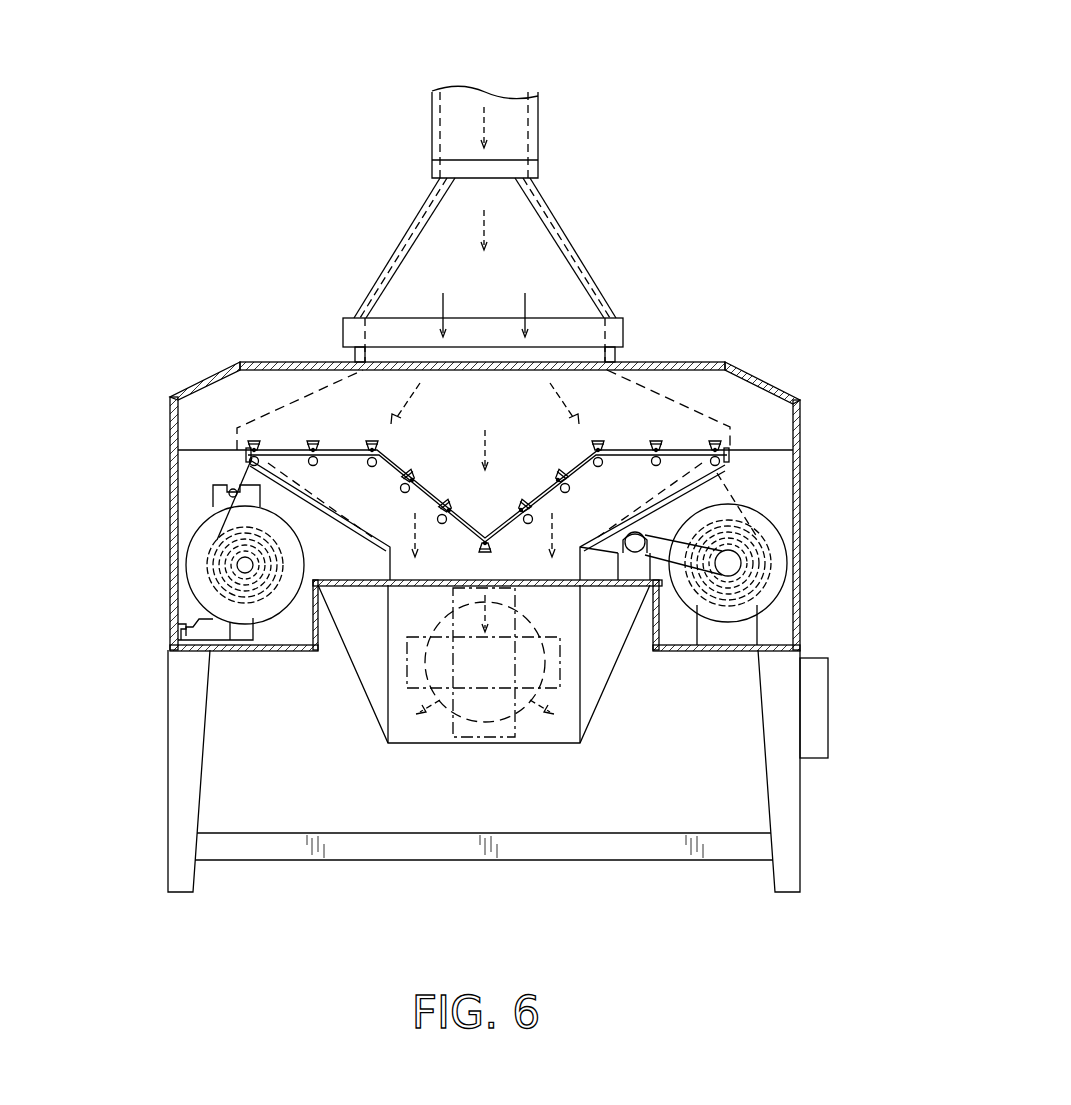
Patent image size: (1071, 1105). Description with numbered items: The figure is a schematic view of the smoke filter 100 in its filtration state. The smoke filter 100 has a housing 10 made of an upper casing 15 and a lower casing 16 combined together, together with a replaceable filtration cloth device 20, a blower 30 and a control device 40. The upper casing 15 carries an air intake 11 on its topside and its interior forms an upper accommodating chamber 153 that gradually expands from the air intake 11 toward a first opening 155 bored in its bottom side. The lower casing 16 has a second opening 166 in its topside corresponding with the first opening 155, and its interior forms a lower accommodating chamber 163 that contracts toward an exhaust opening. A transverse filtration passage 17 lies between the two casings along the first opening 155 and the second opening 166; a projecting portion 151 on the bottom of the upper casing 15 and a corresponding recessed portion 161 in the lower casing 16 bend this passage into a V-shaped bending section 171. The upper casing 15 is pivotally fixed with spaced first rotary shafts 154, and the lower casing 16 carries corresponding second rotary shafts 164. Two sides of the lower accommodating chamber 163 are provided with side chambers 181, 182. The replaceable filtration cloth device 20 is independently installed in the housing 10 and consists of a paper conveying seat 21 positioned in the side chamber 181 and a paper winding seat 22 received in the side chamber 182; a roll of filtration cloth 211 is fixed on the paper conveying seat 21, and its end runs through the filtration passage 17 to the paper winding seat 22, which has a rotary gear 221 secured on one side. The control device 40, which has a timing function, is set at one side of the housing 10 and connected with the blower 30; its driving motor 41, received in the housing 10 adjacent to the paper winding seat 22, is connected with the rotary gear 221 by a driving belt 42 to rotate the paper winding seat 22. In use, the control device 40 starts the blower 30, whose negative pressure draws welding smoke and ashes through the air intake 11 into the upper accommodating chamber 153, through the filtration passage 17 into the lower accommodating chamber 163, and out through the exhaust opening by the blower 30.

The smoke filter 100 is at (686, 154).
The housing 10 is at (762, 380).
The air intake 11 is at (505, 113).
The upper casing 15 is at (727, 397).
The projecting portion 151 is at (447, 478).
The upper accommodating chamber 153 is at (632, 368).
The first rotary shafts 154 is at (253, 446).
The first opening 155 is at (577, 368).
The lower casing 16 is at (722, 423).
The recessed portion 161 is at (700, 622).
The lower accommodating chamber 163 is at (180, 637).
The second rotary shafts 164 is at (248, 456).
The second opening 166 is at (320, 578).
The filtration passage 17 is at (273, 450).
The bending section 171 is at (390, 548).
The side chamber 181 is at (188, 502).
The side chamber 182 is at (773, 463).
The replaceable filtration cloth device 20 is at (783, 528).
The paper conveying seat 21 is at (200, 528).
The filtration cloth 211 is at (200, 563).
The paper winding seat 22 is at (735, 563).
The rotary gear 221 is at (775, 603).
The blower 30 is at (485, 744).
The control device 40 is at (813, 757).
The driving motor 41 is at (635, 532).
The driving belt 42 is at (725, 488).